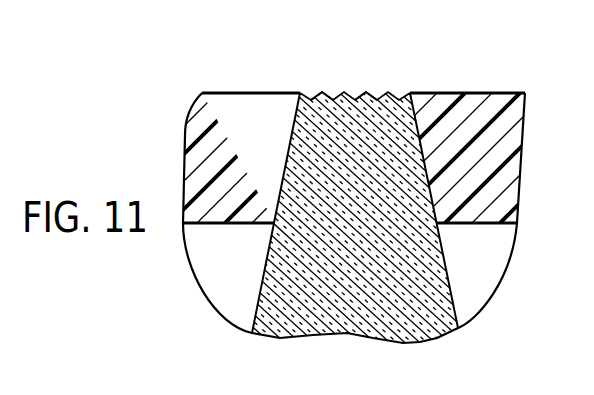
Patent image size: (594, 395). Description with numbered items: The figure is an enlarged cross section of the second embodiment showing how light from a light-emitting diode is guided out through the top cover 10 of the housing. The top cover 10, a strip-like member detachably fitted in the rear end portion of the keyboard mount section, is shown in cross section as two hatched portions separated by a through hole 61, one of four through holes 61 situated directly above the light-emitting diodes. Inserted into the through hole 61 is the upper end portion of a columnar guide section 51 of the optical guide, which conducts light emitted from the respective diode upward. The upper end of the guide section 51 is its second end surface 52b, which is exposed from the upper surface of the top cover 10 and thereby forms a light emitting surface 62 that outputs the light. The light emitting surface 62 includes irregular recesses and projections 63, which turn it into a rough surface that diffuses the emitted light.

The top cover 10 is at (515, 131).
The guide section 51 is at (433, 272).
The second end surface 52b is at (395, 93).
The through hole 61 is at (292, 140).
The light emitting surface 62 is at (323, 91).
The recesses and projections 63 is at (381, 93).